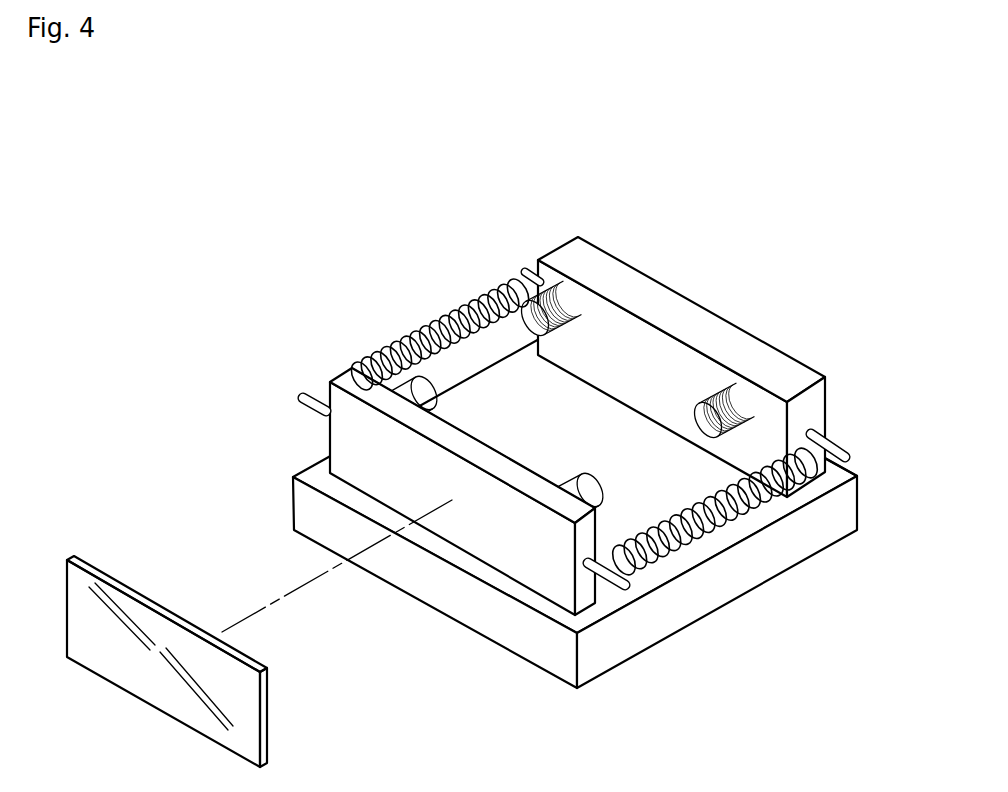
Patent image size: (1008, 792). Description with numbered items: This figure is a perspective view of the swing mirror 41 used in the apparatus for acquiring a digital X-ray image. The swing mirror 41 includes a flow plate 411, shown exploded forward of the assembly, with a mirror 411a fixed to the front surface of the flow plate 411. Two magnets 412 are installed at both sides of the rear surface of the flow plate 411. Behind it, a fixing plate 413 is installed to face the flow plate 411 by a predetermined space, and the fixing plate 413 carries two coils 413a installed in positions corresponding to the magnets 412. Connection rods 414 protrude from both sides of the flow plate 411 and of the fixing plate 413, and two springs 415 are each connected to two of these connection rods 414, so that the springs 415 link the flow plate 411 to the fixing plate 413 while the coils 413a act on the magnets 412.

The swing mirror 41 is at (810, 215).
The flow plate 411 is at (335, 435).
The mirror 411a is at (132, 683).
The magnet 412 is at (410, 387).
The fixing plate 413 is at (690, 308).
The coil 413a is at (733, 390).
The connection rod 414 is at (310, 397).
The spring 415 is at (468, 302).